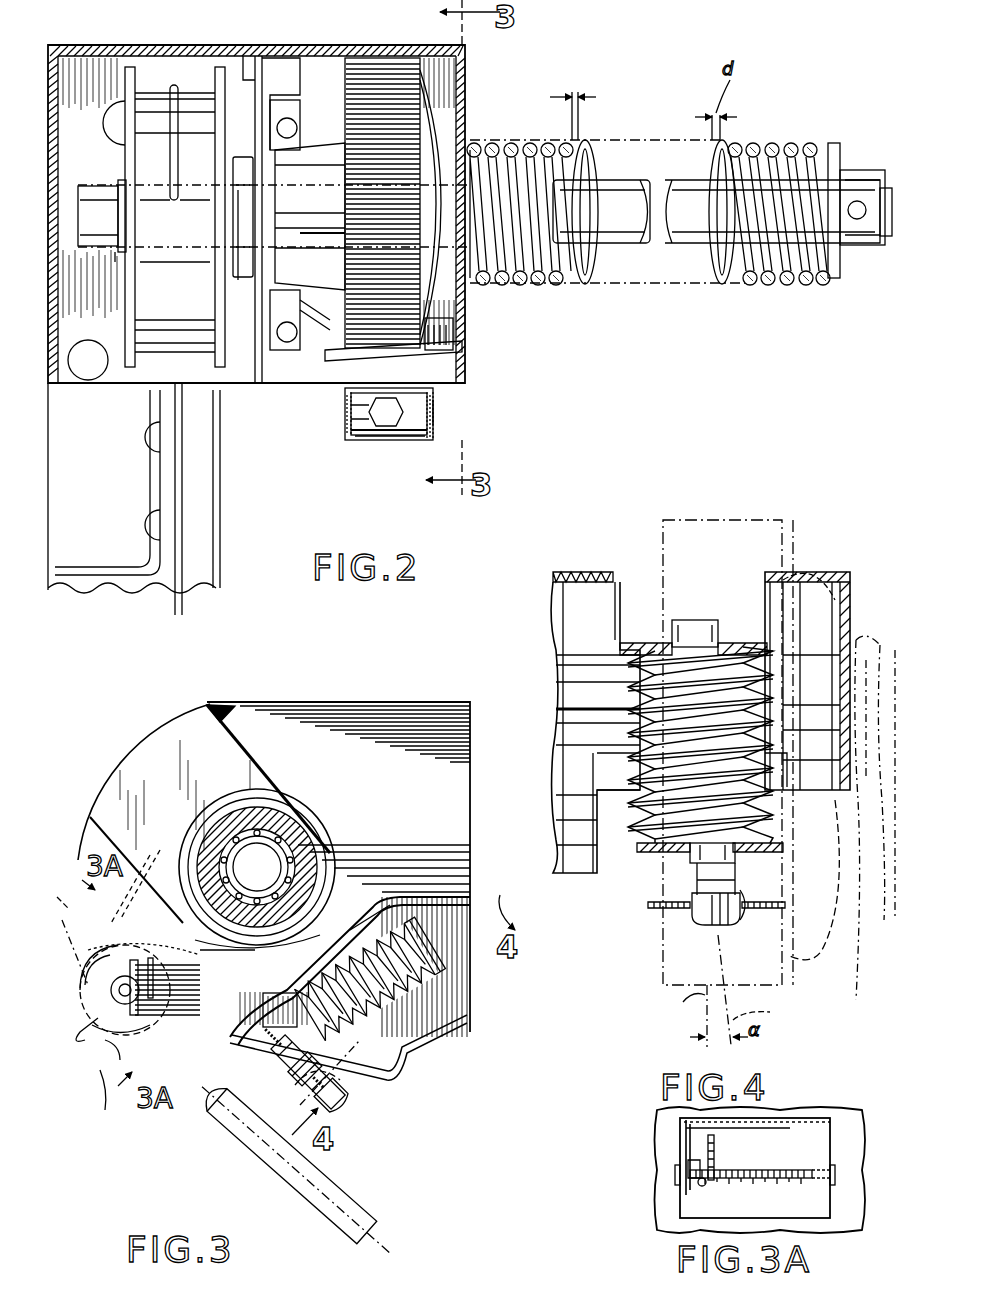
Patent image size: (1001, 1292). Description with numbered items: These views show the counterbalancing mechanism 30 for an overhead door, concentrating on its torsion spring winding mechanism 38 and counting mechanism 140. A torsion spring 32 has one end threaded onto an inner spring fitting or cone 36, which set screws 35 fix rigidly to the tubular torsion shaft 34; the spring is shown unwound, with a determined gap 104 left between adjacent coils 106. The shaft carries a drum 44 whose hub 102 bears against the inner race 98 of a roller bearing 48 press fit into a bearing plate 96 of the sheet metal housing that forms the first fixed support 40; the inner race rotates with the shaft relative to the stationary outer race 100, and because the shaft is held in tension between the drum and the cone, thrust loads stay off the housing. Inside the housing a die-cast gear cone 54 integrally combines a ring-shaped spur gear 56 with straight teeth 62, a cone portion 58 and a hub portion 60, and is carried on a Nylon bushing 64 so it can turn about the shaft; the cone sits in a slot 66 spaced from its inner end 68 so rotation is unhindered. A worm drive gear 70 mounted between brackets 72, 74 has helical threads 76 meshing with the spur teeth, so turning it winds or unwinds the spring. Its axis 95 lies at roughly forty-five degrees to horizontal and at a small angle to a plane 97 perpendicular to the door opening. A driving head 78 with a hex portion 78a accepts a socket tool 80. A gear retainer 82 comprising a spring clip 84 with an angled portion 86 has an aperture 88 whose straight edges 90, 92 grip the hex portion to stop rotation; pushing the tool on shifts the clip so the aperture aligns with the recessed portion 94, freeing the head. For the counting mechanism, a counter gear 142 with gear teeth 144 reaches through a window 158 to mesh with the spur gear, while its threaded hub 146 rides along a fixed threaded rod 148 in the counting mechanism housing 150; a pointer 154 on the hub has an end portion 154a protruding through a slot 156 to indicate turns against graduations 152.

In FIG. 2, the counterbalancing mechanism 30 is at (556, 384).
In FIG. 2, the torsion spring 32 is at (725, 285).
In FIG. 4, the torsion spring 32 is at (870, 640).
In FIG. 2, the torsion shaft 34 is at (100, 195).
In FIG. 3, the torsion shaft 34 is at (288, 870).
In FIG. 2, the set screws 35 is at (858, 228).
In FIG. 2, the inner spring fitting or cone 36 is at (842, 150).
In FIG. 2, the winding mechanism 38 is at (445, 78).
In FIG. 3, the winding mechanism 38 is at (165, 800).
In FIG. 4, the winding mechanism 38 is at (748, 500).
In FIG. 2, the first fixed support 40 is at (305, 47).
In FIG. 3, the first fixed support 40 is at (372, 702).
In FIG. 4, the first fixed support 40 is at (560, 570).
In FIG. 3A, the first fixed support 40 is at (848, 1115).
In FIG. 2, the drum 44 is at (180, 246).
In FIG. 3, the drum 44 is at (185, 750).
In FIG. 2, the roller bearing 48 is at (240, 392).
In FIG. 2, the gear cone 54 is at (440, 118).
In FIG. 4, the gear cone 54 is at (792, 540).
In FIG. 2, the ring-shaped gear 56 is at (388, 78).
In FIG. 3, the ring-shaped gear 56 is at (135, 879).
In FIG. 4, the ring-shaped gear 56 is at (705, 520).
In FIG. 2, the cone portion 58 is at (440, 142).
In FIG. 4, the cone portion 58 is at (835, 945).
In FIG. 2, the hub portion 60 is at (320, 211).
In FIG. 4, the hub portion 60 is at (632, 915).
In FIG. 2, the teeth 62 is at (345, 213).
In FIG. 2, the bushing 64 is at (316, 105).
In FIG. 3, the bushing 64 is at (290, 848).
In FIG. 3, the slot 66 is at (245, 730).
In FIG. 3, the inner end 68 is at (257, 947).
In FIG. 2, the worm drive gear 70 is at (345, 356).
In FIG. 3, the worm drive gear 70 is at (440, 962).
In FIG. 4, the worm drive gear 70 is at (720, 690).
In FIG. 3, the bracket 72 is at (415, 900).
In FIG. 4, the bracket 72 is at (580, 658).
In FIG. 2, the bracket 74 is at (430, 375).
In FIG. 3, the bracket 74 is at (405, 1066).
In FIG. 4, the bracket 74 is at (645, 850).
In FIG. 2, the helical teeth or threads 76 is at (302, 300).
In FIG. 3, the helical teeth or threads 76 is at (440, 1018).
In FIG. 4, the helical teeth or threads 76 is at (640, 770).
In FIG. 3, the driving head 78 is at (283, 1068).
In FIG. 4, the driving head 78 is at (690, 930).
In FIG. 2, the hex portion 78a is at (386, 430).
In FIG. 3, the hex portion 78a is at (340, 1082).
In FIG. 4, the hex portion 78a is at (728, 928).
In FIG. 3, the socket tool 80 is at (200, 1110).
In FIG. 2, the gear retainer 82 is at (433, 407).
In FIG. 3, the gear retainer 82 is at (255, 1035).
In FIG. 4, the gear retainer 82 is at (640, 925).
In FIG. 2, the spring clip 84 is at (433, 397).
In FIG. 3, the spring clip 84 is at (285, 1020).
In FIG. 2, the angled portion 86 is at (348, 432).
In FIG. 3, the angled portion 86 is at (345, 1080).
In FIG. 4, the angled portion 86 is at (690, 915).
In FIG. 2, the aperture 88 is at (362, 440).
In FIG. 2, the straight edge 90 is at (350, 424).
In FIG. 4, the straight edge 90 is at (692, 860).
In FIG. 2, the straight edge 92 is at (435, 418).
In FIG. 4, the straight edge 92 is at (745, 900).
In FIG. 3, the stepped down or recessed portion 94 is at (290, 993).
In FIG. 4, the stepped down or recessed portion 94 is at (742, 915).
In FIG. 3, the axis 95 is at (335, 1105).
In FIG. 4, the axis 95 is at (770, 1012).
In FIG. 2, the bearing plate 96 is at (245, 76).
In FIG. 4, the plane 97 is at (682, 1009).
In FIG. 2, the inner race 98 is at (262, 240).
In FIG. 2, the outer race 100 is at (243, 205).
In FIG. 2, the hub 102 is at (116, 262).
In FIG. 2, the gap 104 is at (576, 88).
In FIG. 2, the coils 106 is at (574, 143).
In FIG. 3, the counting mechanism 140 is at (240, 1085).
In FIG. 3, the counter gear 142 is at (150, 958).
In FIG. 3A, the counter gear 142 is at (716, 1150).
In FIG. 3, the gear teeth 144 is at (135, 960).
In FIG. 3, the hub 146 is at (185, 980).
In FIG. 3A, the hub 146 is at (685, 1130).
In FIG. 3, the threaded rod 148 is at (180, 968).
In FIG. 3A, the threaded rod 148 is at (765, 1170).
In FIG. 3, the counting mechanism housing 150 is at (88, 958).
In FIG. 3A, the counting mechanism housing 150 is at (808, 1118).
In FIG. 3A, the graduations 152 is at (690, 1180).
In FIG. 3, the pointer 154 is at (152, 1035).
In FIG. 3, the end portion 154a is at (90, 1035).
In FIG. 3A, the end portion 154a is at (700, 1185).
In FIG. 3, the slot 156 is at (103, 1100).
In FIG. 3A, the slot 156 is at (810, 1174).
In FIG. 3A, the window 158 is at (782, 1120).